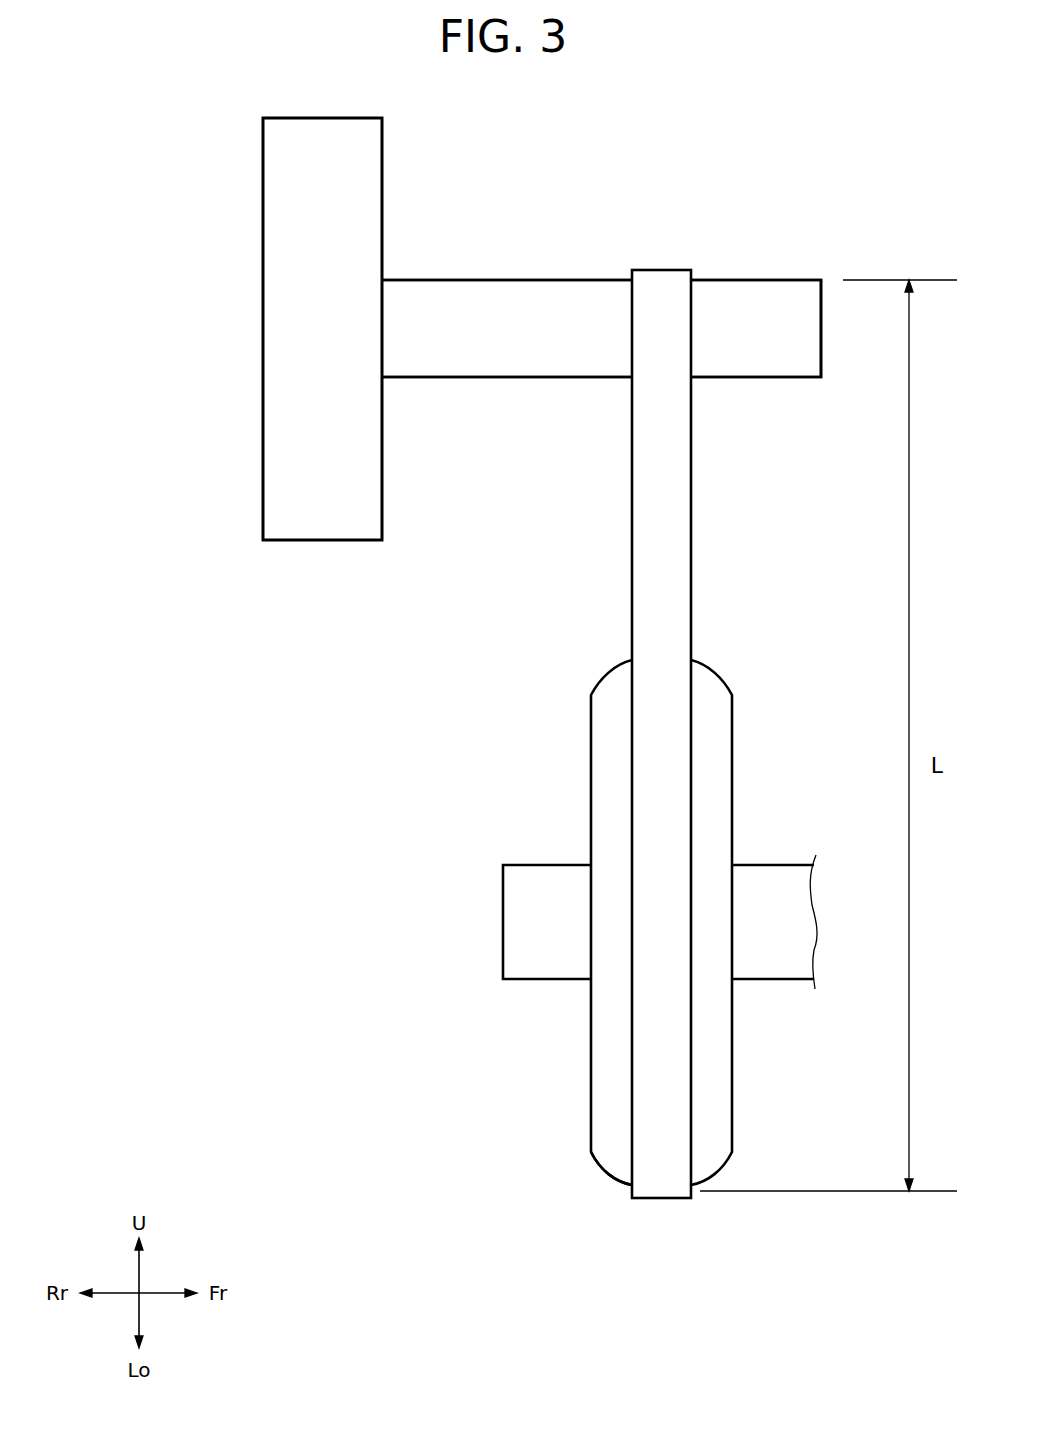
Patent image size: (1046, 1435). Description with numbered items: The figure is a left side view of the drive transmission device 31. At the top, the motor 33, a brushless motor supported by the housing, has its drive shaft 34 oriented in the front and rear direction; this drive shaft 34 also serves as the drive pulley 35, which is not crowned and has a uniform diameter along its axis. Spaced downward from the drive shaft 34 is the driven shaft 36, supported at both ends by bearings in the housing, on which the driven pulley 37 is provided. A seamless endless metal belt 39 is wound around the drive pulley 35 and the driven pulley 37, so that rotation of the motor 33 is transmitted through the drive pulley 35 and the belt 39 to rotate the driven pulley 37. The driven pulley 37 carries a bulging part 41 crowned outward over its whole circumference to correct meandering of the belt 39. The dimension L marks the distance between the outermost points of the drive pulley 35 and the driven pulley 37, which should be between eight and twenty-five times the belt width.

The drive transmission device 31 is at (186, 179).
The motor 33 is at (378, 149).
The drive shaft 34 is at (743, 278).
The drive pulley 35 is at (601, 328).
The driven shaft 36 is at (545, 983).
The driven pulley 37 is at (590, 1075).
The belt 39 is at (632, 545).
The bulging part 41 is at (616, 1183).